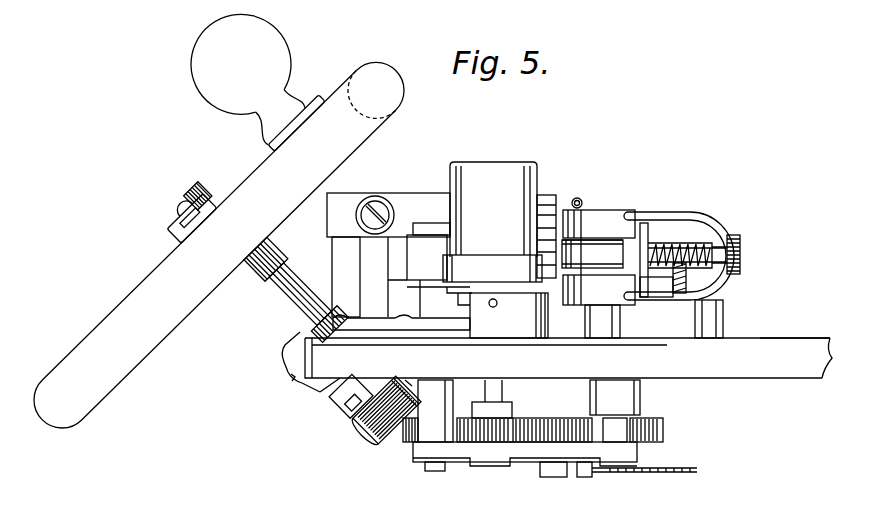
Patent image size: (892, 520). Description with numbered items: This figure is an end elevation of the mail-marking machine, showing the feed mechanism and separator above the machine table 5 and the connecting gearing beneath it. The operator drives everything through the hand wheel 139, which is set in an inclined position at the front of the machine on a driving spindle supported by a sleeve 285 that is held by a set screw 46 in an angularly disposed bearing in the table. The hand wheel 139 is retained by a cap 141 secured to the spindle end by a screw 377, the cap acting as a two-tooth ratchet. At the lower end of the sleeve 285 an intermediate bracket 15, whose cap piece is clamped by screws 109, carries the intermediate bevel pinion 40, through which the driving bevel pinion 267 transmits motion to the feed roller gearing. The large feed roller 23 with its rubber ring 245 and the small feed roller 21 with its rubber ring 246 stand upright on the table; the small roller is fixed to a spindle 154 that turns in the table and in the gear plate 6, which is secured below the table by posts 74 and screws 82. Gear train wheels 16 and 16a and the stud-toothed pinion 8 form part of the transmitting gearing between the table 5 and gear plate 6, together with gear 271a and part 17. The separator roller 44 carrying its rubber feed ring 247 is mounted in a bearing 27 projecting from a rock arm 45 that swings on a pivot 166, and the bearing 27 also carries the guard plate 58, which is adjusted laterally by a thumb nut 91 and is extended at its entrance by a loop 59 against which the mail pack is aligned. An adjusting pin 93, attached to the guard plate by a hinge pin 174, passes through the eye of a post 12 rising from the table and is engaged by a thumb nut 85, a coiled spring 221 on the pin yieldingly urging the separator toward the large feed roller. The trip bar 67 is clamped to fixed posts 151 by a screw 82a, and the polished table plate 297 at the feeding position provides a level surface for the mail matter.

The machine table 5 is at (568, 358).
The gear plate 6 is at (640, 453).
The pinion 8 is at (581, 477).
The post 12 is at (723, 317).
The intermediate bracket 15 is at (378, 386).
The gear train wheel 16 is at (404, 442).
The gear 16a is at (664, 427).
The support block 17 is at (548, 312).
The small feed roller 21 is at (503, 220).
The large feed roller 23 is at (425, 227).
The separator spindle bearing 27 is at (620, 322).
The intermediate bevel pinion 40 is at (409, 384).
The separator roller 44 is at (597, 240).
The rock arm 45 is at (641, 393).
The set screw 46 is at (290, 376).
The guard plate 58 is at (616, 205).
The loop 59 is at (694, 208).
The trip bar 67 is at (421, 197).
The post 74 is at (435, 411).
The screw 82 is at (430, 472).
The screw 82a is at (376, 198).
The thumb nut 85 is at (741, 245).
The thumb nut 91 is at (687, 295).
The adjusting pin 93 is at (655, 247).
The screws 109 is at (338, 408).
The hand wheel 139 is at (208, 220).
The cap 141 is at (213, 197).
The fixed posts 151 is at (360, 278).
The spindle 154 is at (507, 389).
The pivot 166 is at (607, 420).
The hinge pin 174 is at (583, 192).
The coiled spring 221 is at (680, 247).
The rubber ring 245 is at (439, 270).
The rubber ring 246 is at (492, 268).
The rubber feed ring 247 is at (592, 254).
The driving bevel pinion 267 is at (366, 434).
The gear 271a is at (516, 428).
The sleeve 285 is at (262, 306).
The table plate 297 is at (785, 338).
The screw 377 is at (186, 210).